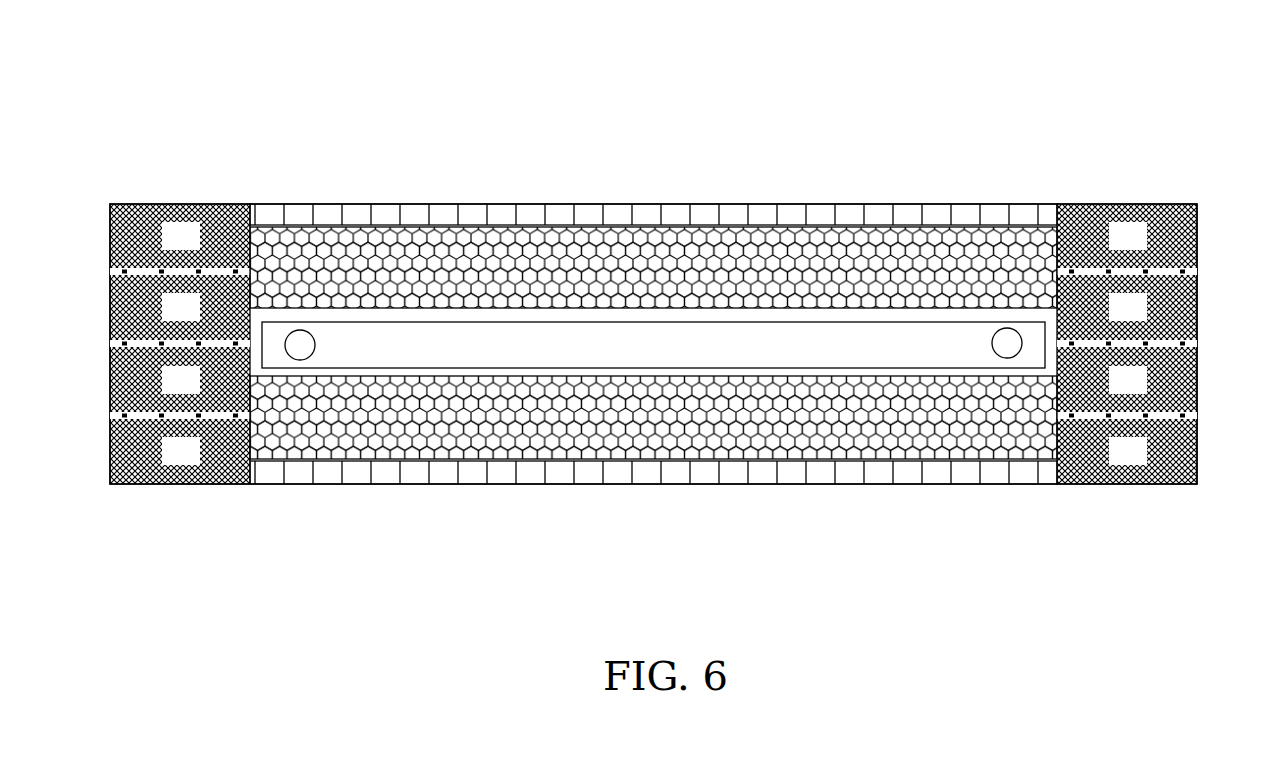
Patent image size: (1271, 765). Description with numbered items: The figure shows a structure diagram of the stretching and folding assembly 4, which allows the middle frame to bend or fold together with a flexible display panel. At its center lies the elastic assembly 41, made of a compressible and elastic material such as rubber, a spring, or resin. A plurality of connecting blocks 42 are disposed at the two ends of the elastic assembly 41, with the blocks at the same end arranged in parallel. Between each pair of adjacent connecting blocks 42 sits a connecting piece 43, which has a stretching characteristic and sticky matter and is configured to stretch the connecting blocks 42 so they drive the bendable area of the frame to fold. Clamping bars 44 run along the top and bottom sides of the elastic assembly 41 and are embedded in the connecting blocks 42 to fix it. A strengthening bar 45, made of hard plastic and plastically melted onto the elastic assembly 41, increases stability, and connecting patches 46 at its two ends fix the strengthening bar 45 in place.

The stretching and folding assembly 4 is at (797, 128).
The elastic assembly 41 is at (475, 238).
The connecting blocks 42 is at (653, 344).
The connecting pieces 43 is at (110, 273).
The clamping bars 44 is at (378, 204).
The strengthening bar 45 is at (775, 307).
The connecting patches 46 is at (313, 349).